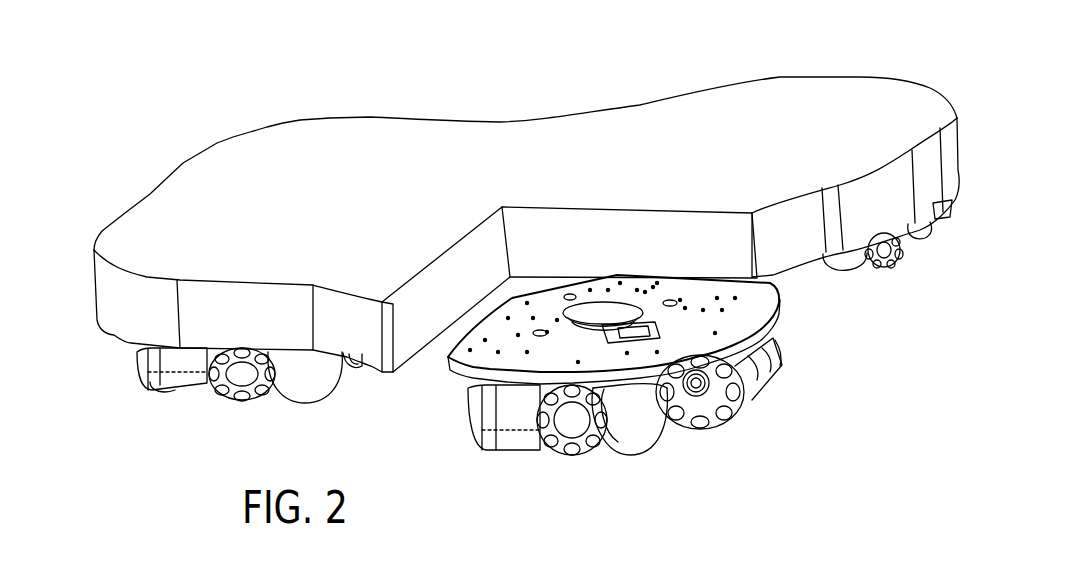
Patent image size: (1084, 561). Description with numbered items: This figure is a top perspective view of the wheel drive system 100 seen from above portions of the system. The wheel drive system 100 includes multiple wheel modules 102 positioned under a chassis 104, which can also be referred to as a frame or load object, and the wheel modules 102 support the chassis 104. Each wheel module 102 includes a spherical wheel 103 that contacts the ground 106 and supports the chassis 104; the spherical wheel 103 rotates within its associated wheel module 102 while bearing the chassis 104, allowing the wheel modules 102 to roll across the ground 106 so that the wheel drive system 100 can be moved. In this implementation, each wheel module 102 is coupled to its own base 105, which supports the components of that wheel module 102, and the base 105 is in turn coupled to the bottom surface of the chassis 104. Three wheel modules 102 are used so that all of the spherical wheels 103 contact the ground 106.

The wheel drive system 100 is at (287, 77).
The wheel module 102 is at (193, 405).
The spherical wheel 103 is at (643, 432).
The chassis 104 is at (745, 92).
The base 105 is at (670, 292).
The ground 106 is at (398, 436).